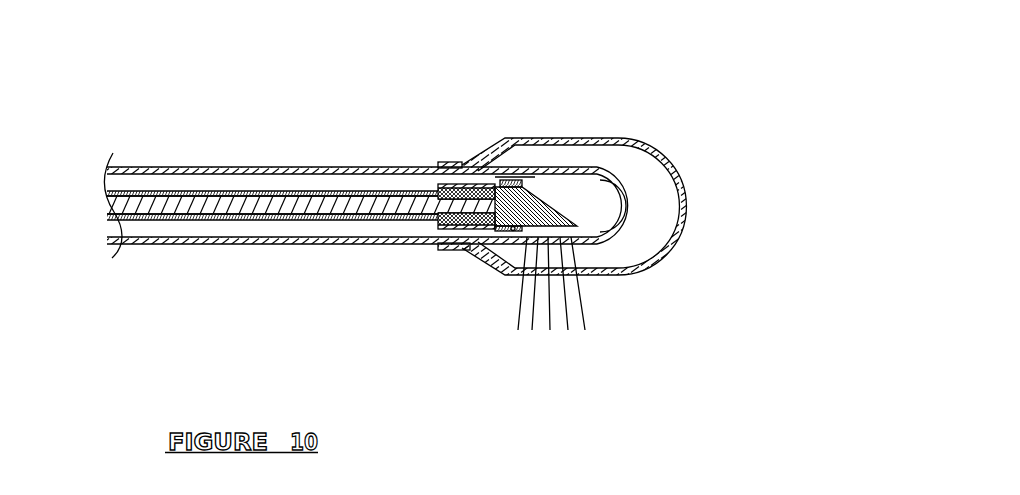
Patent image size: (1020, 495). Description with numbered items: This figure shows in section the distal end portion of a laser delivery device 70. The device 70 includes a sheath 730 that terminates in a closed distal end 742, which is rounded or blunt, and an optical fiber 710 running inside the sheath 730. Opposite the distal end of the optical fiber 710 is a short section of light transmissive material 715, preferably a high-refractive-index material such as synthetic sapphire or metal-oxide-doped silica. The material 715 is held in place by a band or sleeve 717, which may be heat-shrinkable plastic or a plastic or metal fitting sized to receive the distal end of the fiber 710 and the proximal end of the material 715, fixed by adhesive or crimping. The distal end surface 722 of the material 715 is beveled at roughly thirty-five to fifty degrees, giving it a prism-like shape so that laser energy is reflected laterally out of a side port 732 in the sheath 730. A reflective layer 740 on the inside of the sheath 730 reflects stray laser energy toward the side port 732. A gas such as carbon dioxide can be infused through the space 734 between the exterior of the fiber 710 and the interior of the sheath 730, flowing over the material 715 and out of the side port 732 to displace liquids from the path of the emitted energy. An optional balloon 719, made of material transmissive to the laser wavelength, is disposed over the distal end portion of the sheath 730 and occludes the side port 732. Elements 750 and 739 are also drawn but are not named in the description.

The device 70 is at (439, 202).
The optical fiber 710 is at (397, 174).
The sheath 730 is at (142, 166).
The space 734 is at (263, 224).
The spacer ring 750 is at (440, 163).
The band or sleeve 717 is at (442, 185).
The light transmissive material 715 is at (537, 212).
The reflective layer 740 is at (567, 210).
The distal end surface 722 is at (634, 205).
The closed distal end 742 is at (629, 210).
The balloon 719 is at (686, 213).
The side port 732 is at (520, 272).
The emitted light rays 739 is at (587, 290).